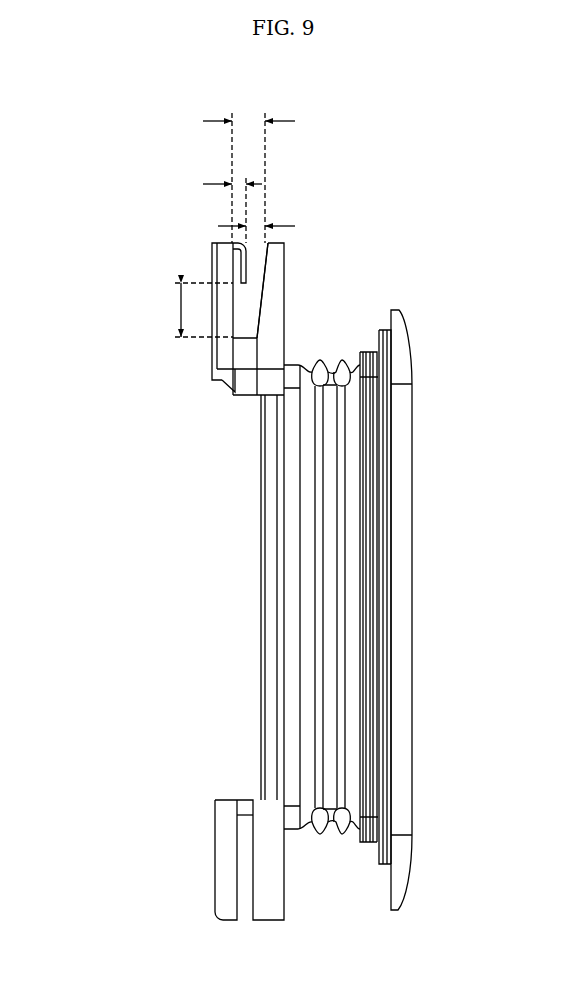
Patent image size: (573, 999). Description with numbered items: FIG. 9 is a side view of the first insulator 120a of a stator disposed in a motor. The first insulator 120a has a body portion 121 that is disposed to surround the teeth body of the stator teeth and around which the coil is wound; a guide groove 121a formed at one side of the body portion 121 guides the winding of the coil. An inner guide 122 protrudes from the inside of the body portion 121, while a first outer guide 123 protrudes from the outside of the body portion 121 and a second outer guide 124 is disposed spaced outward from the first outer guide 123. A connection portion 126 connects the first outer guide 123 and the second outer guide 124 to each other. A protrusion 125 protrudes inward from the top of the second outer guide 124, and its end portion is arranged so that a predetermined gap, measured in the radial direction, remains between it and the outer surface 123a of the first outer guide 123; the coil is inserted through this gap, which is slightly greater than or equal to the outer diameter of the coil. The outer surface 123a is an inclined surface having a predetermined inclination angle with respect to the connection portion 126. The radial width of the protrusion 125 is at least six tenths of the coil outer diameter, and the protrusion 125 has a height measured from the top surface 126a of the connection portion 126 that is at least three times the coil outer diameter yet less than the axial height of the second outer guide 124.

The first insulator 120a is at (70, 199).
The body portion 121 is at (347, 540).
The guide groove 121a is at (350, 486).
The inner guide 122 is at (413, 332).
The first outer guide 123 is at (284, 290).
The outer surface 123a is at (267, 262).
The second outer guide 124 is at (221, 322).
The protrusion 125 is at (238, 258).
The connection portion 126 is at (234, 393).
The top surface 126a is at (233, 332).